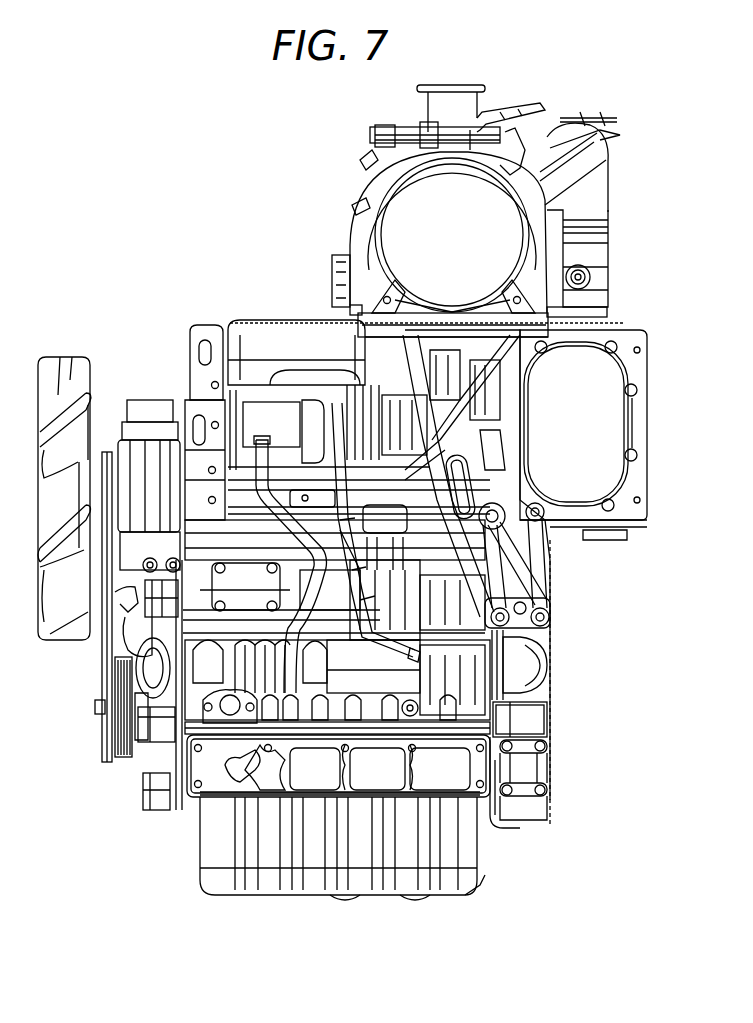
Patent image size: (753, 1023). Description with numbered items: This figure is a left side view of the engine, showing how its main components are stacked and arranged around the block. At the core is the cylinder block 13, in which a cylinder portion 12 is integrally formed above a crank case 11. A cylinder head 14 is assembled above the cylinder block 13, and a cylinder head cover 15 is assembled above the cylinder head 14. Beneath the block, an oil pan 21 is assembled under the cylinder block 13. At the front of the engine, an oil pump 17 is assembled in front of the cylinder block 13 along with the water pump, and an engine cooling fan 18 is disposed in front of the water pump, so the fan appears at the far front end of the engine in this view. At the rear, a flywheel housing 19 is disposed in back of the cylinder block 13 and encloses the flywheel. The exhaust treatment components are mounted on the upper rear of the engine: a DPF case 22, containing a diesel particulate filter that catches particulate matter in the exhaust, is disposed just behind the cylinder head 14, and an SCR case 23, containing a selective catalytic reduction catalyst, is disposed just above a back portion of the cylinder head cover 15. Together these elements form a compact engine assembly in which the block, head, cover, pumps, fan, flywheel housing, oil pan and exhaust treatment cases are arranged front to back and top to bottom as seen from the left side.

The crank case 11 is at (485, 722).
The cylinder portion 12 is at (547, 600).
The cylinder block 13 is at (492, 800).
The cylinder head 14 is at (218, 383).
The cylinder head cover 15 is at (265, 373).
The oil pump 17 is at (145, 725).
The engine cooling fan 18 is at (64, 378).
The flywheel housing 19 is at (527, 713).
The oil pan 21 is at (463, 853).
The DPF case 22 is at (615, 388).
The SCR case 23 is at (495, 255).